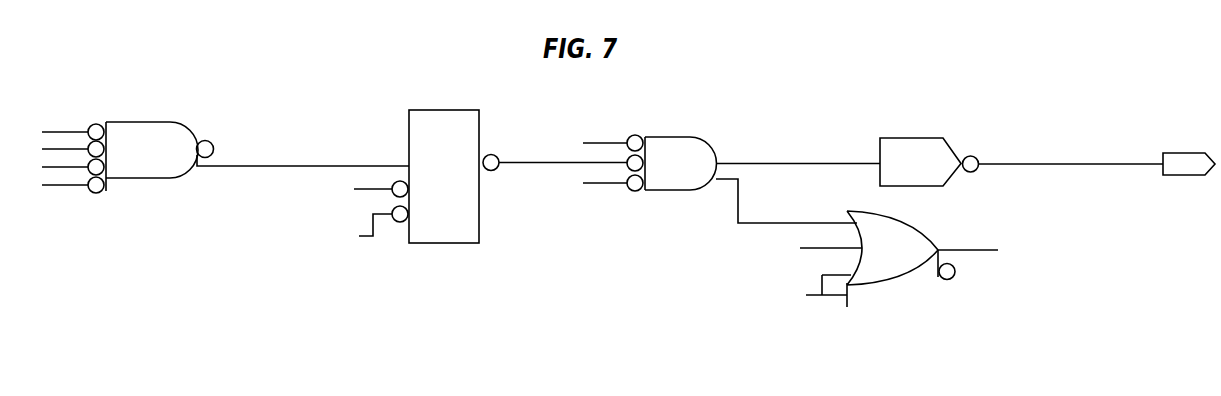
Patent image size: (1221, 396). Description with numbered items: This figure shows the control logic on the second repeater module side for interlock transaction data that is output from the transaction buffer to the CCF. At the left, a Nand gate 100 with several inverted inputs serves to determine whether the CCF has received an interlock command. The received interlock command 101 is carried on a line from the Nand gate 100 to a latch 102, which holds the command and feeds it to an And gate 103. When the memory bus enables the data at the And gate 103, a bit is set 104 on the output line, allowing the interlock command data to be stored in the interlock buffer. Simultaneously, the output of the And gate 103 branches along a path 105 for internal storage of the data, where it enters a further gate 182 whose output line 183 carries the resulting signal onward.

The Nand gate 100 is at (150, 139).
The received interlock command 101 is at (275, 165).
The latch 102 is at (420, 128).
The And gate 103 is at (678, 150).
The bit set 104 is at (1083, 162).
The path 105 is at (760, 222).
The NOR gate 182 is at (909, 270).
The output line 183 is at (965, 248).